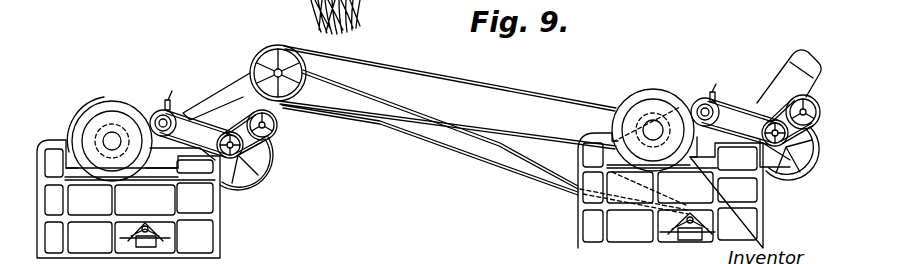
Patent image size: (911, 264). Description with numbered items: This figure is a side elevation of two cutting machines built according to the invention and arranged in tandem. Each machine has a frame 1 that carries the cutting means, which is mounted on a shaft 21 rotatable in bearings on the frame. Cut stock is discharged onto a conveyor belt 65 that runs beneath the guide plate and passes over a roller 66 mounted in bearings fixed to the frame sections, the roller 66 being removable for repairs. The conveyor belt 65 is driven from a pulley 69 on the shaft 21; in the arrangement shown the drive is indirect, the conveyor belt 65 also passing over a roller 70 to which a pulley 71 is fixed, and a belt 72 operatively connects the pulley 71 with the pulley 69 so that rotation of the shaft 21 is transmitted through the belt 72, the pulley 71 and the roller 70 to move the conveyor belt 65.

The frame 1 is at (220, 232).
The shaft 21 is at (653, 128).
The conveyor belt 65 is at (502, 165).
The roller 66 is at (665, 227).
The pulley 69 is at (672, 94).
The roller 70 is at (323, 83).
The pulley 71 is at (256, 52).
The belt 72 is at (517, 84).